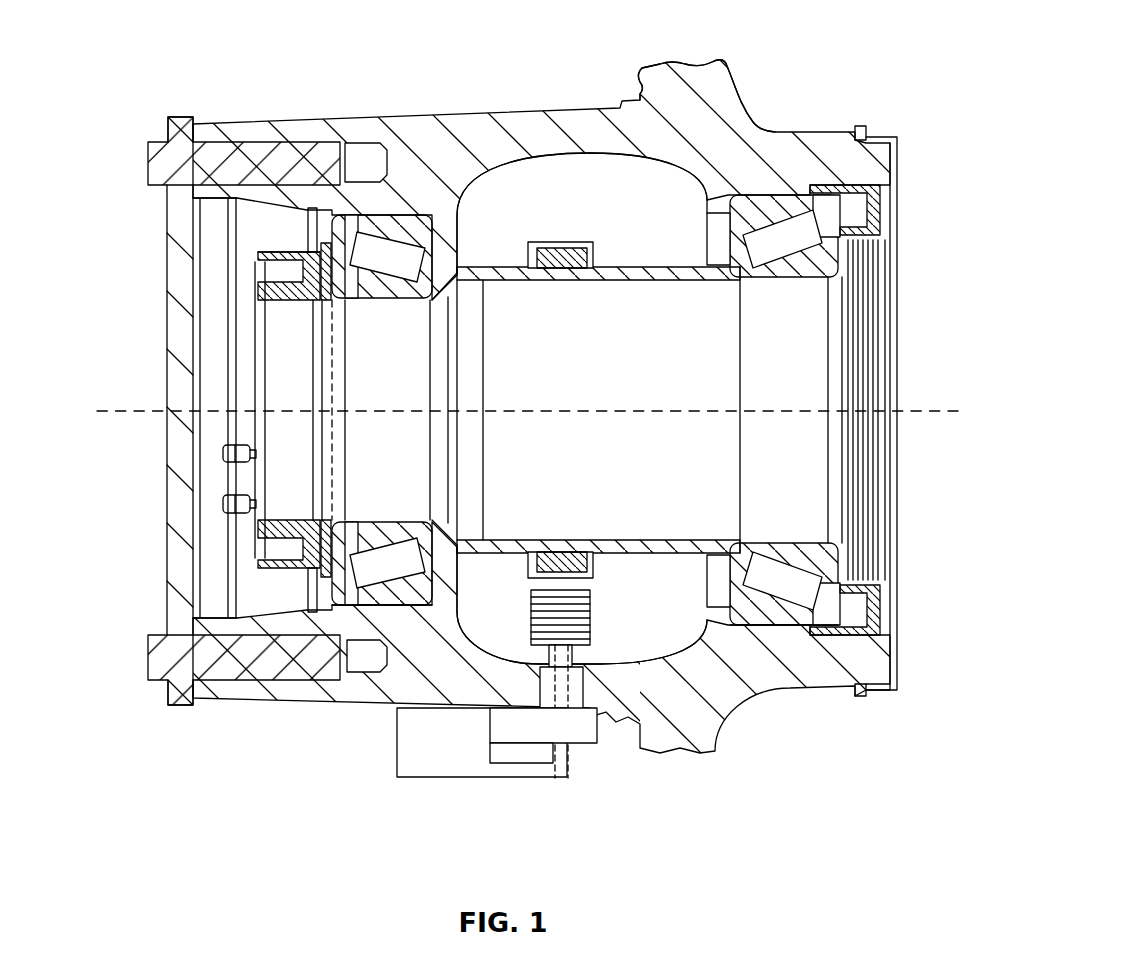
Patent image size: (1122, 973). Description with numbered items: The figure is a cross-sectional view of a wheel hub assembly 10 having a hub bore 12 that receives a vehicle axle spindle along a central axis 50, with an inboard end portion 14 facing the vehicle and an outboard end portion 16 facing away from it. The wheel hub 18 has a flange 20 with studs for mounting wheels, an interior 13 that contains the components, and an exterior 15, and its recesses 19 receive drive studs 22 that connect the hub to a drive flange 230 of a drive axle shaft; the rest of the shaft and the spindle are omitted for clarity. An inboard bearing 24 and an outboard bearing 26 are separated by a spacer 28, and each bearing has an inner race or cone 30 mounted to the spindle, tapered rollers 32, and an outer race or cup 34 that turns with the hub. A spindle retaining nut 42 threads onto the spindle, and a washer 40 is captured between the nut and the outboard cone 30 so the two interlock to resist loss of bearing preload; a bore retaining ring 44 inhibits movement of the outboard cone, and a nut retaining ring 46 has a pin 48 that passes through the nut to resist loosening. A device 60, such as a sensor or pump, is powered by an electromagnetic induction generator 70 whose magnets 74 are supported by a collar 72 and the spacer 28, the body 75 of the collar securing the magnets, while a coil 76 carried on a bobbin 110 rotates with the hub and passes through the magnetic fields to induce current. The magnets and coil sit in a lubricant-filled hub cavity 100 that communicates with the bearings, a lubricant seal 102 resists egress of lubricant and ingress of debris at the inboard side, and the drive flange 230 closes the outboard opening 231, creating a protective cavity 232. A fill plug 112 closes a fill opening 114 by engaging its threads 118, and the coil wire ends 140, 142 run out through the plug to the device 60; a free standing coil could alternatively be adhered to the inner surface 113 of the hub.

The wheel hub assembly 10 is at (487, 96).
The hub bore 12 is at (905, 328).
The interior 13 is at (215, 322).
The inboard end portion 14 is at (897, 150).
The exterior 15 is at (255, 700).
The outboard end portion 16 is at (195, 137).
The wheel hub 18 is at (747, 115).
The recesses 19 is at (267, 140).
The flange 20 is at (660, 742).
The drive studs 22 is at (170, 660).
The inboard bearing 24 is at (790, 622).
The outboard bearing 26 is at (353, 612).
The spacer 28 is at (565, 282).
The cone 30 is at (368, 300).
The tapered rollers 32 is at (778, 585).
The cup 34 is at (398, 213).
The washer 40 is at (333, 240).
The spindle retaining nut 42 is at (262, 570).
The bore retaining ring 44 is at (310, 210).
The nut retaining ring 46 is at (262, 262).
The pin 48 is at (288, 238).
The central axis 50 is at (127, 410).
The device 60 is at (448, 777).
The electromagnetic induction generator 70 is at (494, 621).
The collar 72 is at (560, 253).
The magnets 74 is at (562, 263).
The body 75 is at (528, 262).
The coil 76 is at (590, 612).
The hub cavity 100 is at (604, 190).
The lubricant seal 102 is at (882, 228).
The bobbin 110 is at (573, 680).
The fill plug 112 is at (573, 655).
The inner surface 113 is at (665, 178).
The fill opening 114 is at (587, 683).
The threads 118 is at (540, 655).
The wire end 140 is at (528, 770).
The wire end 142 is at (555, 778).
The drive flange 230 is at (170, 440).
The outboard opening 231 is at (195, 578).
The cavity 232 is at (215, 482).